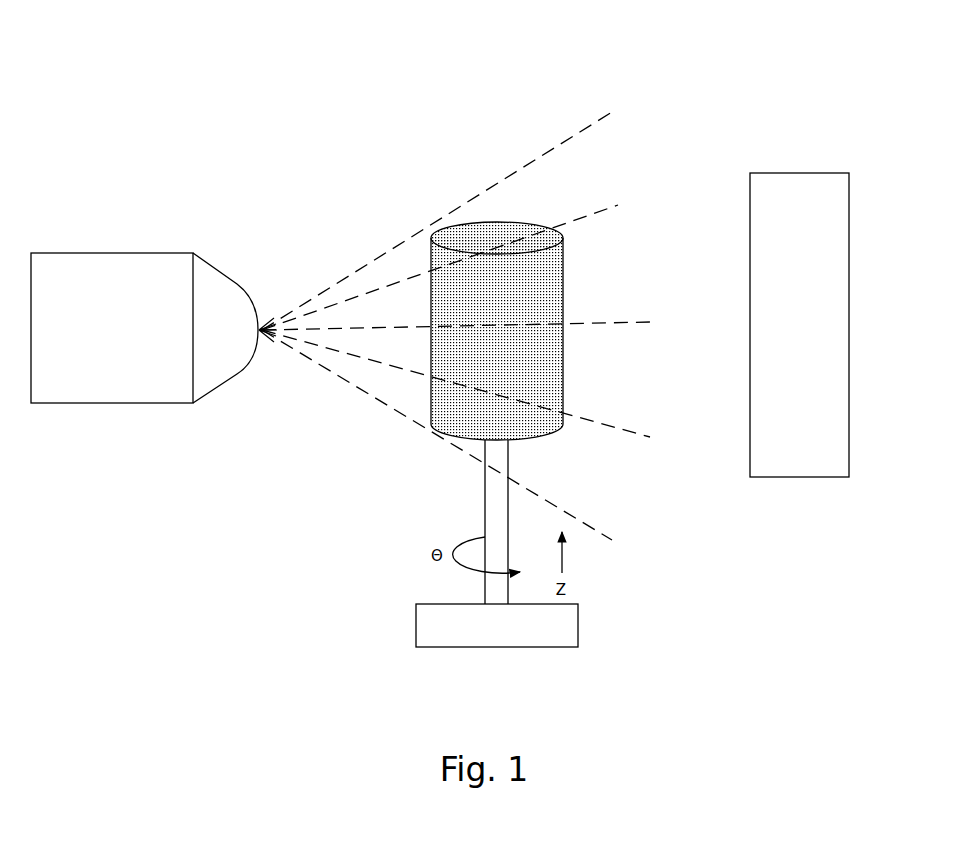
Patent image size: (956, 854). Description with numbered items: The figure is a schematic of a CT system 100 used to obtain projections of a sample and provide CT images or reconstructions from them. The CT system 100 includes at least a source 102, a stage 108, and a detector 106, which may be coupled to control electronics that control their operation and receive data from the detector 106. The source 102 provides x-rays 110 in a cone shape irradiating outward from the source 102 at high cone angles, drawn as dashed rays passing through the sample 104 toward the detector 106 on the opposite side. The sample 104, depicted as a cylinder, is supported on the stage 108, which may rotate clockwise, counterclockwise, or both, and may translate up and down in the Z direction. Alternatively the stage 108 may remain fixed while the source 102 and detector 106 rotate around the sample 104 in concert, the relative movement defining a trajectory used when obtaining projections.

The CT system 100 is at (160, 62).
The source 102 is at (110, 405).
The sample 104 is at (543, 437).
The detector 106 is at (800, 477).
The stage 108 is at (495, 648).
The x-rays 110 is at (361, 238).